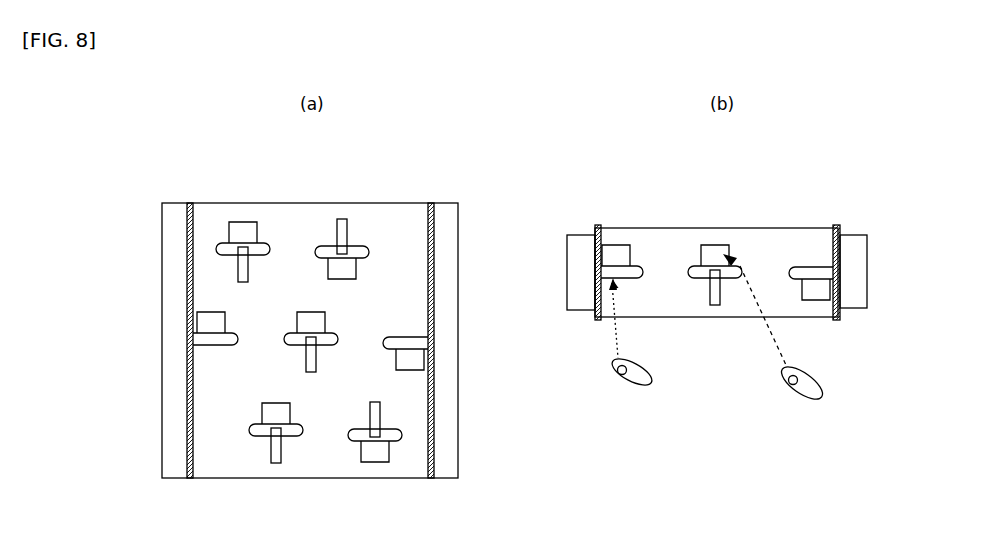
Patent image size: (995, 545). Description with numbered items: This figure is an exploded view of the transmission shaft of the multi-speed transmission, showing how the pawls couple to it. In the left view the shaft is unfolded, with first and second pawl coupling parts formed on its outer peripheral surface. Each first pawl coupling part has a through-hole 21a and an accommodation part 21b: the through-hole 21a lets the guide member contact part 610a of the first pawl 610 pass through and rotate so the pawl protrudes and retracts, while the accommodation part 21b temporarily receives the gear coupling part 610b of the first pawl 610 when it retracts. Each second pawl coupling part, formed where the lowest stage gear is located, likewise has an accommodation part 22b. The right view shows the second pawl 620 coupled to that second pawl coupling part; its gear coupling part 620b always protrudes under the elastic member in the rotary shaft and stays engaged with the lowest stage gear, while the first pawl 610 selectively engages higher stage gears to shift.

The through-hole 21a is at (238, 268).
The accommodation part 21b is at (232, 226).
The recess head 22b is at (205, 314).
The first pawl 610 is at (792, 367).
The guide member contact part 610a is at (806, 399).
The gear coupling part 610b is at (779, 372).
The second pawl 620 is at (600, 368).
The gear coupling part 620b is at (632, 390).